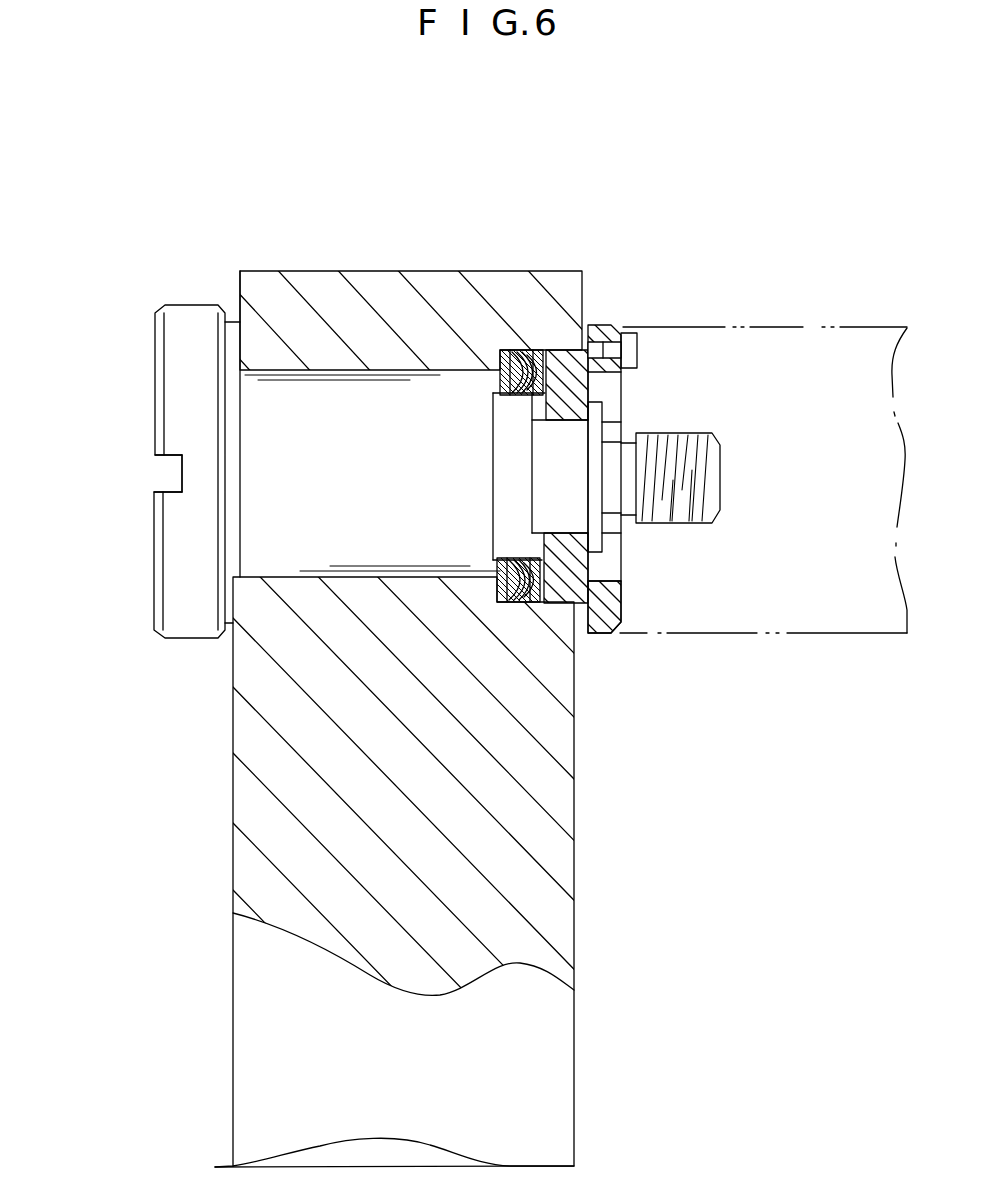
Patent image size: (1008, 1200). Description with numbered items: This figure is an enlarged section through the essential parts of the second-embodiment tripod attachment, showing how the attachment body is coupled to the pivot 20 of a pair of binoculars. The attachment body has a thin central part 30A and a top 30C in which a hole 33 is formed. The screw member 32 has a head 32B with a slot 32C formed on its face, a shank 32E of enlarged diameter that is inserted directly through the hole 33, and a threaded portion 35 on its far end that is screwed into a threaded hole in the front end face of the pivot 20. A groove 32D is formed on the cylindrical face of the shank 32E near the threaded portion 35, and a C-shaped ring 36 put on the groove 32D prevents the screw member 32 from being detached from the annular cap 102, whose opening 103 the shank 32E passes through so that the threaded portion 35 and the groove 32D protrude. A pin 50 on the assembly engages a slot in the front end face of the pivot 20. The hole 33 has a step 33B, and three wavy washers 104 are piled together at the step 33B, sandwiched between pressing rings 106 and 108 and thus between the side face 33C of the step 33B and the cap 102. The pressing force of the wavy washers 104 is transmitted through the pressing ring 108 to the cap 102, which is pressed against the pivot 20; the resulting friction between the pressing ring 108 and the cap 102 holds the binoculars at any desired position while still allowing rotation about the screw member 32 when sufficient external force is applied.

The pivot 20 is at (778, 327).
The central part 30A is at (563, 935).
The top 30C is at (342, 300).
The screw member 32 is at (196, 291).
The head 32B is at (176, 350).
The slot 32C is at (176, 470).
The groove 32D is at (598, 495).
The shank 32E is at (374, 545).
The hole 33 is at (414, 375).
The step 33B is at (506, 605).
The side face 33C is at (515, 557).
The threaded portion 35 is at (700, 513).
The C-shaped ring 36 is at (595, 404).
The pin 50 is at (630, 348).
The cap 102 is at (625, 603).
The opening 103 is at (582, 421).
The wavy washers 104 is at (520, 352).
The pressing ring 106 is at (502, 378).
The pressing ring 108 is at (540, 350).